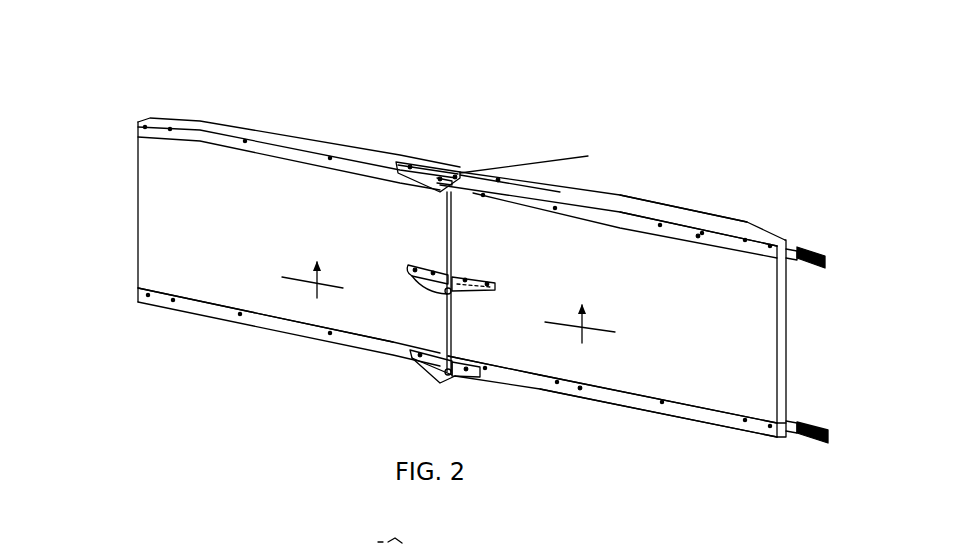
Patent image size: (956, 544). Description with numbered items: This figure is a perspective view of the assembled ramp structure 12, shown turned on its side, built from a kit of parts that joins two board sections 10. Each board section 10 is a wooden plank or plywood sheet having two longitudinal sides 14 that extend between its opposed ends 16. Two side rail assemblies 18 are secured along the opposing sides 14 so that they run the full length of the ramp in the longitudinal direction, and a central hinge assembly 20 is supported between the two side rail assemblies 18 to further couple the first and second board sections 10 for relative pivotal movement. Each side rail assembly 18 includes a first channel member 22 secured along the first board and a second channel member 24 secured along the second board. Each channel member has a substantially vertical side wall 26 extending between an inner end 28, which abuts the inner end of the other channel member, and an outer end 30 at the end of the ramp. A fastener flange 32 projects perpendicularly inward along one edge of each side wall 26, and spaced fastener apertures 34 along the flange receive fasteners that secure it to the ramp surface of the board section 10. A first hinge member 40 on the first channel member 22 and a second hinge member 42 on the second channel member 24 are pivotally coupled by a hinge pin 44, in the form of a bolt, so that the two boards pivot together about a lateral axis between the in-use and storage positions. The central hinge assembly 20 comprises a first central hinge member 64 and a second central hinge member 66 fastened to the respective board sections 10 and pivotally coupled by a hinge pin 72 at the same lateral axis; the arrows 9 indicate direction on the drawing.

The direction arrow 9 is at (447, 305).
The board section 10 is at (199, 248).
The assembled ramp structure 12 is at (465, 54).
The longitudinal side 14 is at (633, 233).
The end 16 is at (446, 312).
The side rail assembly 18 is at (115, 122).
The central hinge assembly 20 is at (416, 289).
The first channel member 22 is at (363, 348).
The second channel member 24 is at (640, 400).
The side wall 26 is at (702, 222).
The inner end 28 is at (479, 144).
The outer end 30 is at (773, 240).
The fastener flange 32 is at (698, 240).
The fastener aperture 34 is at (557, 388).
The first hinge member 40 is at (438, 162).
The second hinge member 42 is at (480, 168).
The hinge pin 44 is at (452, 368).
The first central hinge member 64 is at (430, 262).
The second central hinge member 66 is at (466, 293).
The hinge pin 72 is at (453, 282).